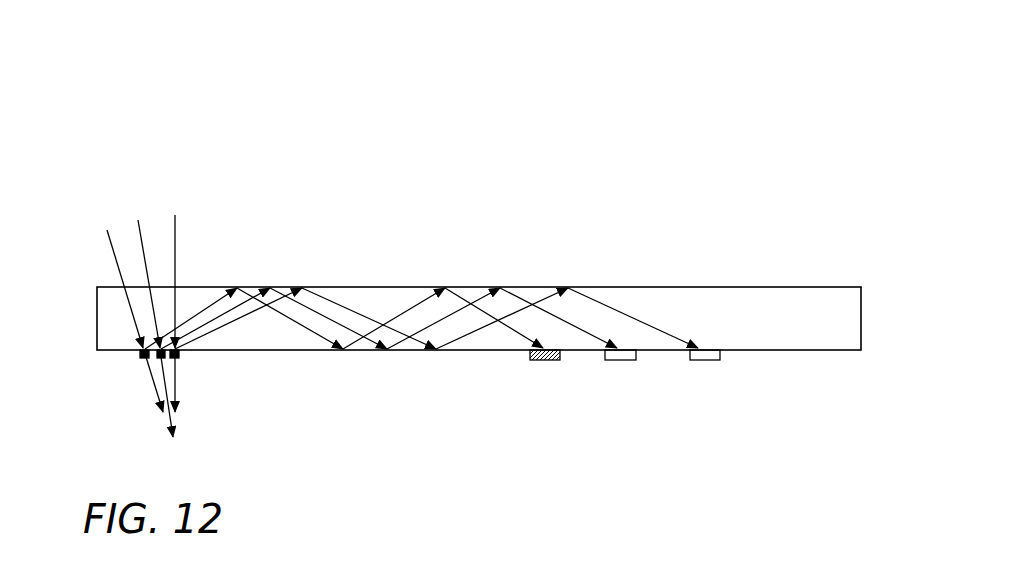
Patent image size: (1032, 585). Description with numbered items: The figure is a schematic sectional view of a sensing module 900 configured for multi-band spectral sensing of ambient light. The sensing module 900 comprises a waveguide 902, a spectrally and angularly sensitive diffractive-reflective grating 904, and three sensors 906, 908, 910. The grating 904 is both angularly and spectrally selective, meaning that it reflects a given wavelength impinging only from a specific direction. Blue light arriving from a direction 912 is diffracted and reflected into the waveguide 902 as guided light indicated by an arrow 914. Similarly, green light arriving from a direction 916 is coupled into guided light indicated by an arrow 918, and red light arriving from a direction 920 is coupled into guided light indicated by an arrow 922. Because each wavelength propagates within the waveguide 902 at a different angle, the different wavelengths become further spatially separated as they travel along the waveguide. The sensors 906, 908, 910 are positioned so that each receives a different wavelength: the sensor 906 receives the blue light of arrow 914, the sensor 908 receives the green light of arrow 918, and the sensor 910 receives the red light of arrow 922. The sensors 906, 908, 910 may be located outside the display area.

The sensing module 900 is at (813, 157).
The waveguide 902 is at (845, 312).
The spectrally and angularly sensitive diffractive-reflective grating 904 is at (143, 357).
The sensor 906 is at (548, 361).
The sensor 908 is at (622, 361).
The sensor 910 is at (707, 361).
The direction 912 is at (107, 230).
The arrow 914 is at (397, 317).
The direction 916 is at (138, 220).
The arrow 918 is at (433, 325).
The direction 920 is at (175, 215).
The arrow 922 is at (468, 337).